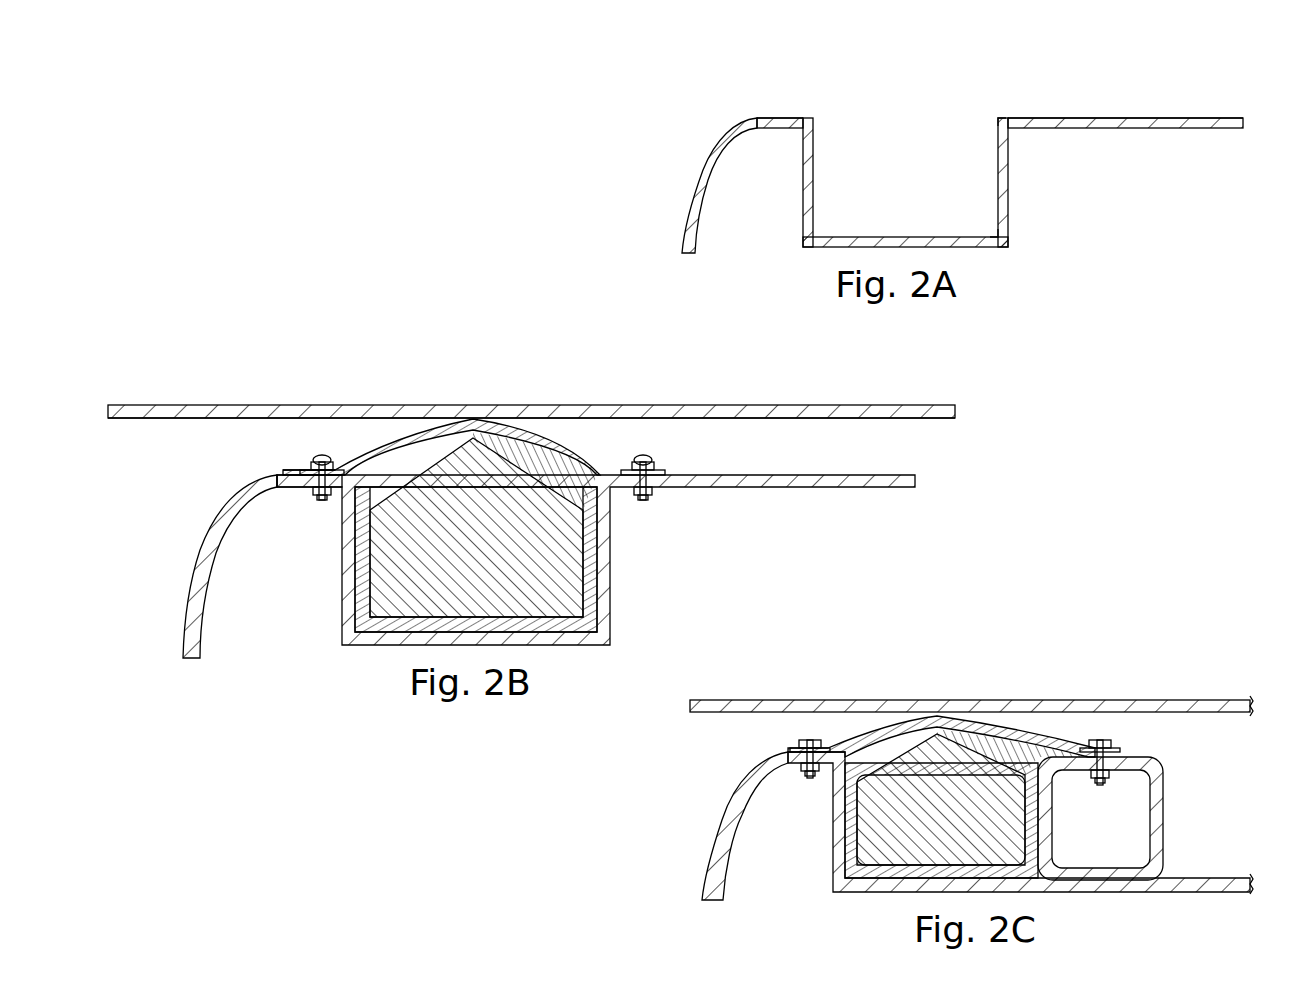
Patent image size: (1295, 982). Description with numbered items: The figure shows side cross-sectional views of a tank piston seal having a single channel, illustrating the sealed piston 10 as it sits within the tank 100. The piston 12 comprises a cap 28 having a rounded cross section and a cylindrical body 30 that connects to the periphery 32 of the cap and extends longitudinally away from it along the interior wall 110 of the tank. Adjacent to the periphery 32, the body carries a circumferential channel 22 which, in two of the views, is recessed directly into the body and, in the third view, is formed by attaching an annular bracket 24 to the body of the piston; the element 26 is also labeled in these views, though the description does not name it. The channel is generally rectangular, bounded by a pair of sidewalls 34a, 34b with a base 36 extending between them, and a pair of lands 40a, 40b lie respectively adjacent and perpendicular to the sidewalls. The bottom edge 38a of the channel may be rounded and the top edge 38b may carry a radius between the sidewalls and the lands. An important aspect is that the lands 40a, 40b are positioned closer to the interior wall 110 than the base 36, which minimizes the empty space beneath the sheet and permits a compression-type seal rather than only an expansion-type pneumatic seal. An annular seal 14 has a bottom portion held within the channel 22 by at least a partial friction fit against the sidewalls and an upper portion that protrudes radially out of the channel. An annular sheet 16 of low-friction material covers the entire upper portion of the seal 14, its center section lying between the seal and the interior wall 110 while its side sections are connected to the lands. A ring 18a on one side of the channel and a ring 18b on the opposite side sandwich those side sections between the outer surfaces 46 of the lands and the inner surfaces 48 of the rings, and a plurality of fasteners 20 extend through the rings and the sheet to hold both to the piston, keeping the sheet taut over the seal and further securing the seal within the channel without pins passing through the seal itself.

In FIG. 2B, the sealed piston 10 is at (482, 490).
In FIG. 2C, the sealed piston 10 is at (950, 781).
In FIG. 2A, the piston 12 is at (889, 164).
In FIG. 2B, the piston 12 is at (472, 493).
In FIG. 2C, the piston 12 is at (950, 781).
In FIG. 2B, the annular seal 14 is at (423, 530).
In FIG. 2C, the annular seal 14 is at (897, 790).
In FIG. 2B, the annular sheet 16 is at (533, 424).
In FIG. 2C, the annular sheet 16 is at (910, 722).
In FIG. 2B, the ring 18a is at (318, 470).
In FIG. 2C, the ring 18a is at (797, 752).
In FIG. 2B, the ring 18b is at (628, 468).
In FIG. 2C, the ring 18b is at (1090, 750).
In FIG. 2B, the fasteners 20 is at (325, 477).
In FIG. 2C, the fasteners 20 is at (808, 745).
In FIG. 2A, the circumferential channel 22 is at (877, 175).
In FIG. 2C, the annular bracket 24 is at (1163, 825).
In FIG. 2A, the tray body 26 is at (942, 164).
In FIG. 2C, the tray body 26 is at (835, 845).
In FIG. 2A, the cap 28 is at (703, 168).
In FIG. 2A, the cylindrical body 30 is at (1180, 118).
In FIG. 2A, the periphery 32 is at (757, 120).
In FIG. 2A, the sidewall 34a is at (812, 160).
In FIG. 2A, the sidewall 34b is at (998, 160).
In FIG. 2A, the base 36 is at (830, 236).
In FIG. 2A, the bottom edge 38a is at (995, 233).
In FIG. 2A, the top edge 38b is at (998, 118).
In FIG. 2A, the land 40a is at (785, 122).
In FIG. 2A, the land 40b is at (1035, 120).
In FIG. 2B, the outer surfaces of the lands 46 is at (305, 478).
In FIG. 2B, the inner surfaces of the rings 48 is at (313, 472).
In FIG. 2B, the tank 100 is at (148, 410).
In FIG. 2B, the interior wall 110 is at (200, 418).